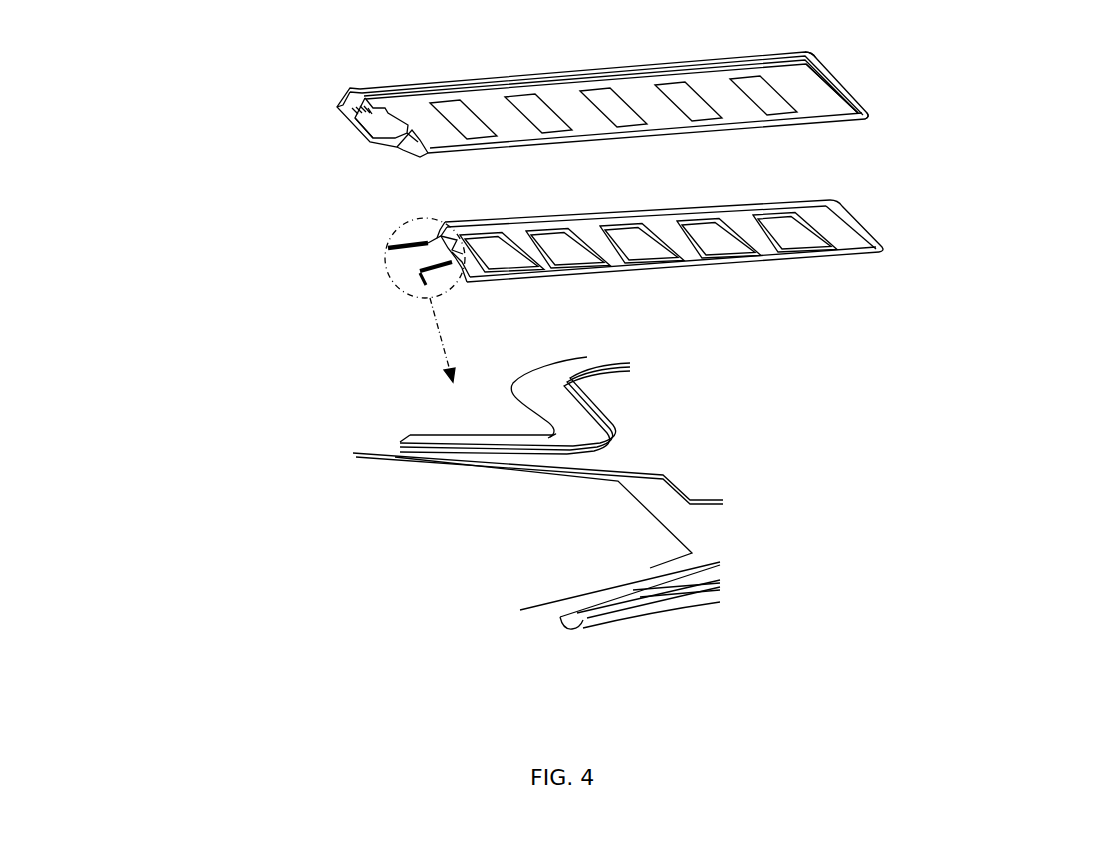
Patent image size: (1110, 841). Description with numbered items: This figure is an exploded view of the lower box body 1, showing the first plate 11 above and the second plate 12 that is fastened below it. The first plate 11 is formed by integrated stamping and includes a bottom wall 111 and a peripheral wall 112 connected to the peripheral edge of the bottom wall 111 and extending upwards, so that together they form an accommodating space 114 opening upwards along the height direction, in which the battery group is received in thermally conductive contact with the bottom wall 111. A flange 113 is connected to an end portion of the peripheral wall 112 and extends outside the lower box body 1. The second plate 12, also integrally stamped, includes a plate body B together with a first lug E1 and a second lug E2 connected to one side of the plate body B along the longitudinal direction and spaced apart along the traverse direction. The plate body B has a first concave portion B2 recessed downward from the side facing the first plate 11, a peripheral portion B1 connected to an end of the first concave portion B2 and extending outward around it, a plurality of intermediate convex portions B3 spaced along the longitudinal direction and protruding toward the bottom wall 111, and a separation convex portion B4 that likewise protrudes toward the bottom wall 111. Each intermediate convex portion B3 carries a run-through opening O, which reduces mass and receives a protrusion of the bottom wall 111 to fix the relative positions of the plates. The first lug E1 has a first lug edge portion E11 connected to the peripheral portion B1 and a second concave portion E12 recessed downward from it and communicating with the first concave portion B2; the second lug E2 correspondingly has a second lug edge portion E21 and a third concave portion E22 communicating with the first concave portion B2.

The lower box body 1 is at (283, 190).
The first plate 11 is at (531, 66).
The bottom wall 111 is at (812, 54).
The peripheral wall 112 is at (866, 120).
The flange 113 is at (814, 71).
The accommodating space 114 is at (624, 82).
The second plate 12 is at (850, 262).
The plate body B is at (676, 196).
The peripheral portion B1 is at (832, 232).
The first concave portion B2 is at (744, 215).
The intermediate convex portion B3 is at (607, 223).
The separation convex portion B4 is at (450, 240).
The opening O is at (630, 231).
The first lug E1 is at (437, 282).
The first lug edge portion E11 is at (447, 268).
The second concave portion E12 is at (420, 272).
The second lug E2 is at (404, 222).
The second lug edge portion E21 is at (396, 228).
The third concave portion E22 is at (388, 245).